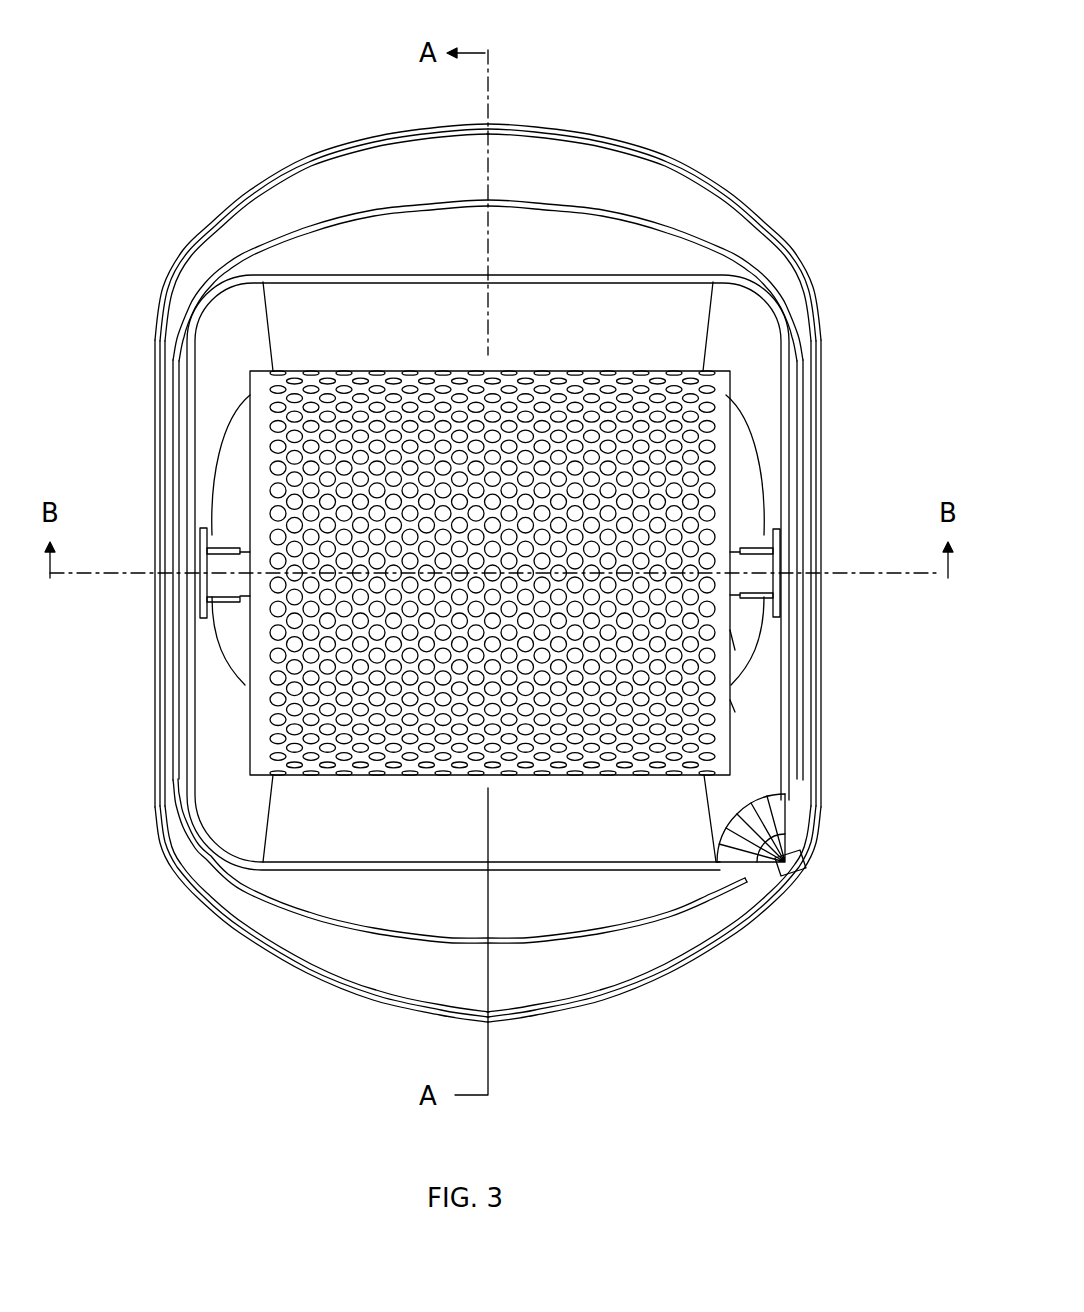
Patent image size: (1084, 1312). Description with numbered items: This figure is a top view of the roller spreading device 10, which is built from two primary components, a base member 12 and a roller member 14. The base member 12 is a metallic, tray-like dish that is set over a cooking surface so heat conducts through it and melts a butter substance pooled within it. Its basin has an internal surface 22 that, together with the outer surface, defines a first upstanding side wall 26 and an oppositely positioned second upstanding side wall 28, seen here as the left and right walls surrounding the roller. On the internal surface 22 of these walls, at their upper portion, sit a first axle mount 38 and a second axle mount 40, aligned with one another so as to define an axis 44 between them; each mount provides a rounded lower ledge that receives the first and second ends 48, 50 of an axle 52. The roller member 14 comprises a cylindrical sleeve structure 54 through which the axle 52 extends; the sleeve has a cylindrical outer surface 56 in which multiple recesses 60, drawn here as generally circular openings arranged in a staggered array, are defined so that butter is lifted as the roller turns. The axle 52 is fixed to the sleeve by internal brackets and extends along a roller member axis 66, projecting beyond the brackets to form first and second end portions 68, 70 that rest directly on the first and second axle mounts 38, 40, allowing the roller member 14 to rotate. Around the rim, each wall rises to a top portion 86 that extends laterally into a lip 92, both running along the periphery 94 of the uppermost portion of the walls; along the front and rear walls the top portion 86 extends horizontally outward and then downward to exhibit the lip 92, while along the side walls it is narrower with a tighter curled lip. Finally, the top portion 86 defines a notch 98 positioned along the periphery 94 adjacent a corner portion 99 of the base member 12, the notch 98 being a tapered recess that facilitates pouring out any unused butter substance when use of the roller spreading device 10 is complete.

The roller spreading device 10 is at (830, 52).
The base member 12 is at (775, 943).
The roller member 14 is at (346, 360).
The internal surface 22 is at (746, 332).
The first upstanding side wall 26 is at (203, 480).
The second upstanding side wall 28 is at (773, 447).
The first axle mount 38 is at (207, 537).
The second axle mount 40 is at (757, 543).
The axis 44 is at (882, 573).
The first end of axle 48 is at (203, 568).
The second end of axle 50 is at (777, 565).
The axle 52 is at (203, 590).
The cylindrical sleeve structure 54 is at (397, 360).
The cylindrical outer surface 56 is at (740, 711).
The multiple recesses 60 is at (740, 650).
The roller member axis 66 is at (756, 595).
The first end portion of axle 68 is at (228, 588).
The second end portion of axle 70 is at (778, 611).
The top portion 86 is at (190, 355).
The lip 92 is at (708, 960).
The periphery 94 is at (679, 204).
The notch 98 is at (784, 836).
The corner portion 99 is at (828, 868).